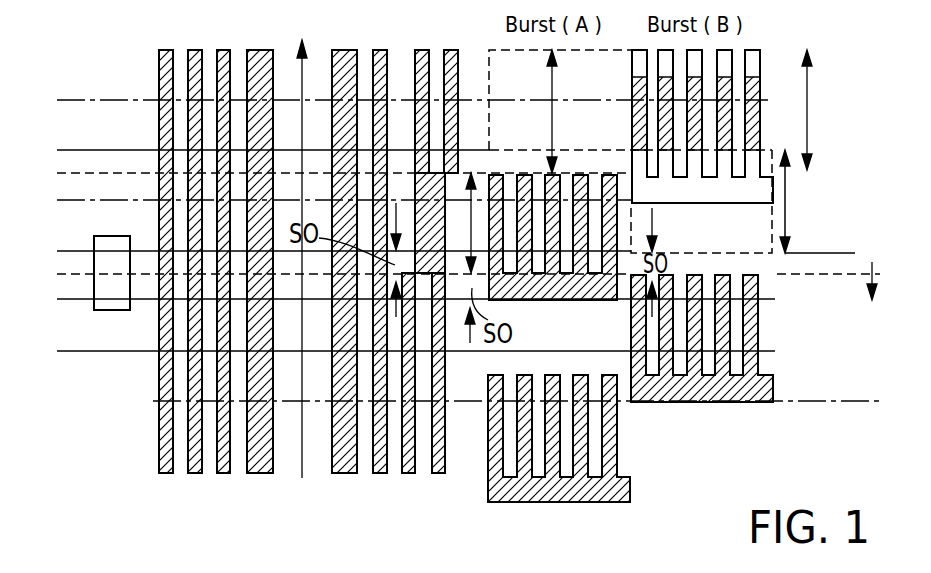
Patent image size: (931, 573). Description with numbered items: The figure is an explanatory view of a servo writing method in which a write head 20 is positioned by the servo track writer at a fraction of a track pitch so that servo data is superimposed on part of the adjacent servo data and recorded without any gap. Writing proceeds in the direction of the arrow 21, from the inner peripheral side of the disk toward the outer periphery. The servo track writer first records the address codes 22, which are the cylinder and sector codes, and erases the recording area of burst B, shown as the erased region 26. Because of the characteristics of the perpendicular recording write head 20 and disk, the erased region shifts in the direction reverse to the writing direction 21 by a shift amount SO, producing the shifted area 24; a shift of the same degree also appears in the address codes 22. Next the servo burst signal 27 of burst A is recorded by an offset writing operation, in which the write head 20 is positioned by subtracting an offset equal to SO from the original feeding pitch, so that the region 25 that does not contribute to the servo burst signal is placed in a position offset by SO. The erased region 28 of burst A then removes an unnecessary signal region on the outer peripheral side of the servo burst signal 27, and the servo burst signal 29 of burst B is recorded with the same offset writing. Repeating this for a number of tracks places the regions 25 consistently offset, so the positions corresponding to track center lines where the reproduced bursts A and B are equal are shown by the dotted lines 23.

The write head 20 is at (108, 311).
The writing direction arrow 21 is at (303, 70).
The address codes 22 is at (448, 487).
The dotted lines 23 is at (58, 173).
The shifted erased area 24 is at (765, 262).
The non-contributing region 25 is at (553, 301).
The erased region of burst B 26 is at (788, 196).
The servo burst signal of burst A 27 is at (474, 197).
The erased region of burst A 28 is at (558, 125).
The servo burst signal of burst B 29 is at (810, 110).